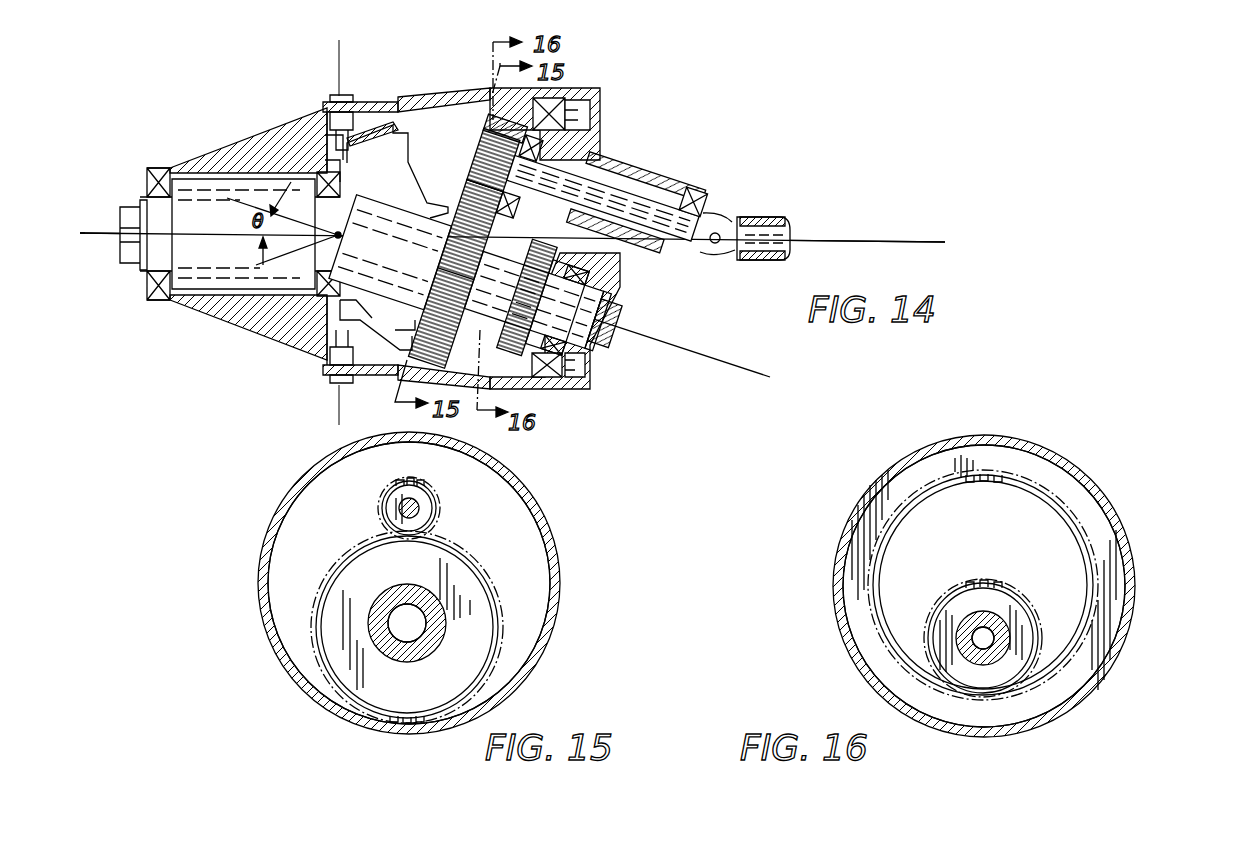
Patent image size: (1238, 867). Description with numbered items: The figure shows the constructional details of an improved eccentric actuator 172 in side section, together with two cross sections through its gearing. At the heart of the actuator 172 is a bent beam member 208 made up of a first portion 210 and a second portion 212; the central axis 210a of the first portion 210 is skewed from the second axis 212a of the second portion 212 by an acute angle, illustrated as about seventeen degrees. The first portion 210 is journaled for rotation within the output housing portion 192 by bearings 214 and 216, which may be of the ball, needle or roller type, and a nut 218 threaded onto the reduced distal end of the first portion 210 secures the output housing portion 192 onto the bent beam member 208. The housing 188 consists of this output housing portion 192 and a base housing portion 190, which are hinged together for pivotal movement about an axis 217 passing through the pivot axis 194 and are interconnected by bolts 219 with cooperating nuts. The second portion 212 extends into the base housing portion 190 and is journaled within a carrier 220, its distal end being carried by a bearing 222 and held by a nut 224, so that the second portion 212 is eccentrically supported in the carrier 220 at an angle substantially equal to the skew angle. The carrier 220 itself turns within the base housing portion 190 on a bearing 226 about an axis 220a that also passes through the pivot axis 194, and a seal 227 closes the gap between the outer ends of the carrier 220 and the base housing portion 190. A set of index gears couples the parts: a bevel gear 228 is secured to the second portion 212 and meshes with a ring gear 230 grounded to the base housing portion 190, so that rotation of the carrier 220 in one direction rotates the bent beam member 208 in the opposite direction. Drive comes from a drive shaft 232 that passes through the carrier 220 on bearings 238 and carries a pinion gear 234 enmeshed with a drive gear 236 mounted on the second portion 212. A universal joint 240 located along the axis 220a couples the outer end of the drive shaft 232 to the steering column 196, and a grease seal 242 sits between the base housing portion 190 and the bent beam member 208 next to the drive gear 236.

In FIG. 14, the actuator 172 is at (712, 103).
In FIG. 14, the housing 188 is at (446, 95).
In FIG. 15, the housing 188 is at (272, 518).
In FIG. 16, the housing 188 is at (1094, 484).
In FIG. 14, the base housing portion 190 is at (574, 88).
In FIG. 15, the base housing portion 190 is at (262, 548).
In FIG. 16, the base housing portion 190 is at (1133, 535).
In FIG. 14, the output housing portion 192 is at (258, 142).
In FIG. 14, the pivot axis 194 is at (340, 237).
In FIG. 14, the steering column 196 is at (765, 218).
In FIG. 14, the bent beam member 208 is at (395, 206).
In FIG. 15, the bent beam member 208 is at (392, 596).
In FIG. 16, the bent beam member 208 is at (970, 612).
In FIG. 14, the first portion 210 is at (235, 231).
In FIG. 14, the central axis 210a is at (97, 232).
In FIG. 14, the second portion 212 is at (395, 227).
In FIG. 15, the second portion 212 is at (424, 650).
In FIG. 16, the second portion 212 is at (1010, 636).
In FIG. 14, the second axis 212a is at (745, 362).
In FIG. 14, the bearing 214 is at (160, 178).
In FIG. 14, the bearing 216 is at (325, 172).
In FIG. 14, the axis 217 is at (339, 60).
In FIG. 14, the nut 218 is at (125, 262).
In FIG. 14, the bolts 219 is at (346, 94).
In FIG. 14, the carrier 220 is at (594, 152).
In FIG. 14, the axis 220a is at (837, 240).
In FIG. 14, the bearing 222 is at (598, 278).
In FIG. 14, the nut 224 is at (608, 338).
In FIG. 14, the bearing 226 is at (570, 100).
In FIG. 14, the seal 227 is at (590, 120).
In FIG. 14, the index gear 228 is at (515, 338).
In FIG. 16, the index gear 228 is at (1000, 583).
In FIG. 14, the ring gear 230 is at (484, 128).
In FIG. 16, the ring gear 230 is at (972, 485).
In FIG. 14, the drive shaft 232 is at (640, 193).
In FIG. 15, the drive shaft 232 is at (392, 508).
In FIG. 14, the pinion gear 234 is at (483, 175).
In FIG. 15, the pinion gear 234 is at (438, 492).
In FIG. 14, the drive gear 236 is at (450, 285).
In FIG. 15, the drive gear 236 is at (462, 553).
In FIG. 14, the bearings 238 is at (703, 203).
In FIG. 14, the universal joint 240 is at (716, 245).
In FIG. 14, the grease seal 242 is at (402, 328).